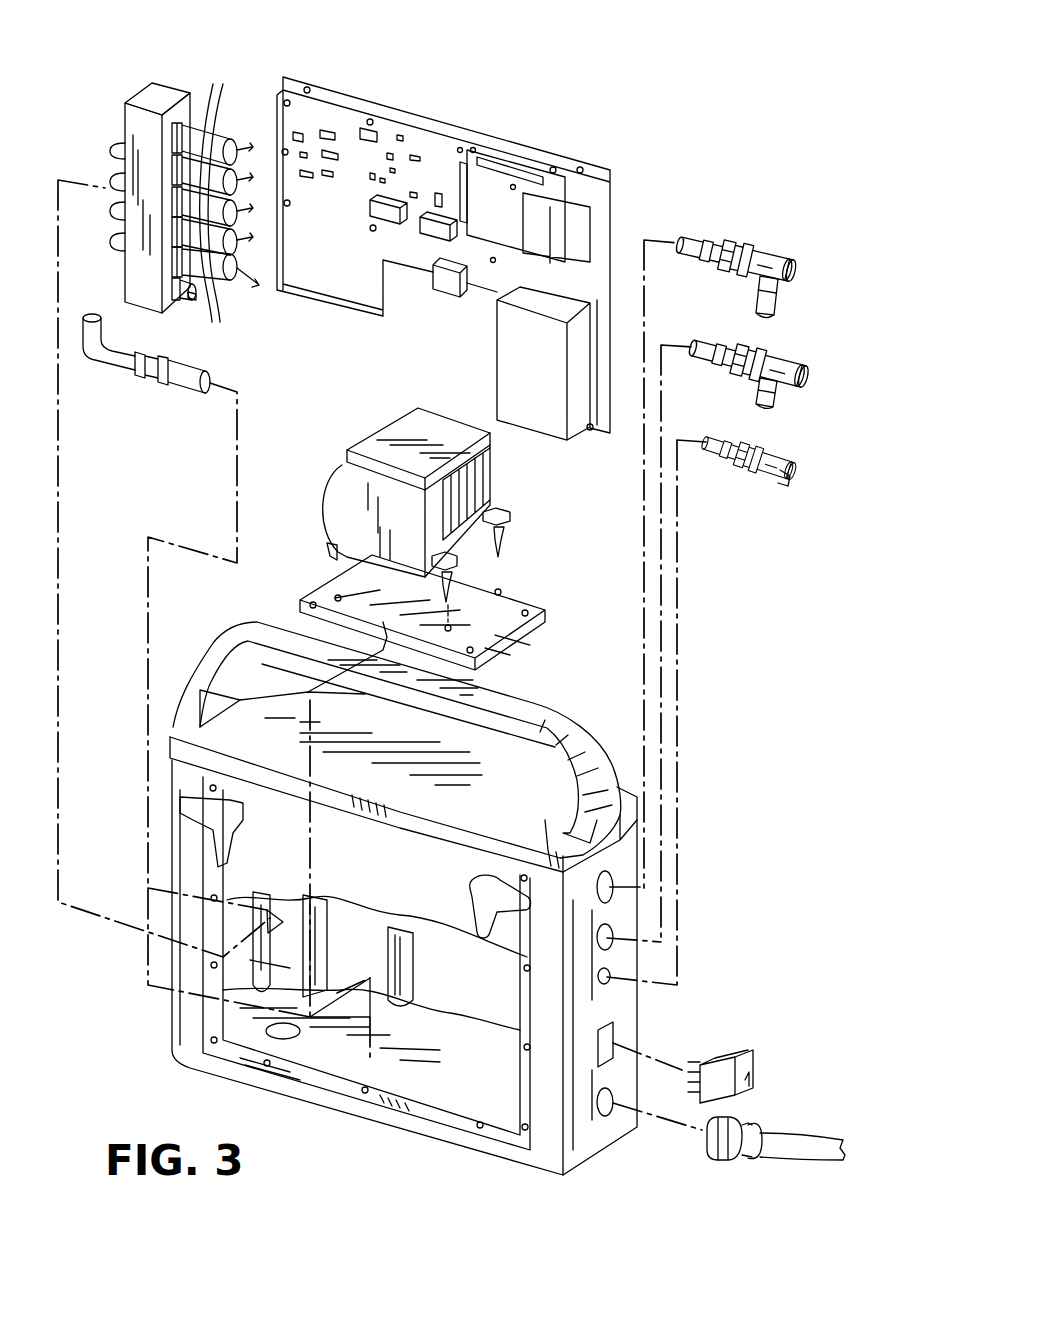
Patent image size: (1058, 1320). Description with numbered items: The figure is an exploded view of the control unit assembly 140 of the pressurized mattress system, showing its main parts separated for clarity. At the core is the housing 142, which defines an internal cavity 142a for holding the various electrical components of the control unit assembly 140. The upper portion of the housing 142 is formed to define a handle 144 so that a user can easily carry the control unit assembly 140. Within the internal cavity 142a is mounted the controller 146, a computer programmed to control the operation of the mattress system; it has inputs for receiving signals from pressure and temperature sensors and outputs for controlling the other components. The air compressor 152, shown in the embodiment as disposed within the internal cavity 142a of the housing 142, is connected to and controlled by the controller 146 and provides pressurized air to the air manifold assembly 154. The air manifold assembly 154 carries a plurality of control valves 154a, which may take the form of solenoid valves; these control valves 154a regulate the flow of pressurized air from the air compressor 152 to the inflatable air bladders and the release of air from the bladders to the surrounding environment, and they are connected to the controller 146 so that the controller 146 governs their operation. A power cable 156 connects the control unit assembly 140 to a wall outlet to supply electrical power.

The control unit assembly 140 is at (725, 97).
The housing 142 is at (625, 1013).
The internal cavity 142a is at (463, 1062).
The handle 144 is at (515, 705).
The controller 146 is at (613, 184).
The air compressor 152 is at (507, 494).
The air manifold assembly 154 is at (172, 92).
The control valves 154a is at (229, 210).
The power cable 156 is at (800, 1140).